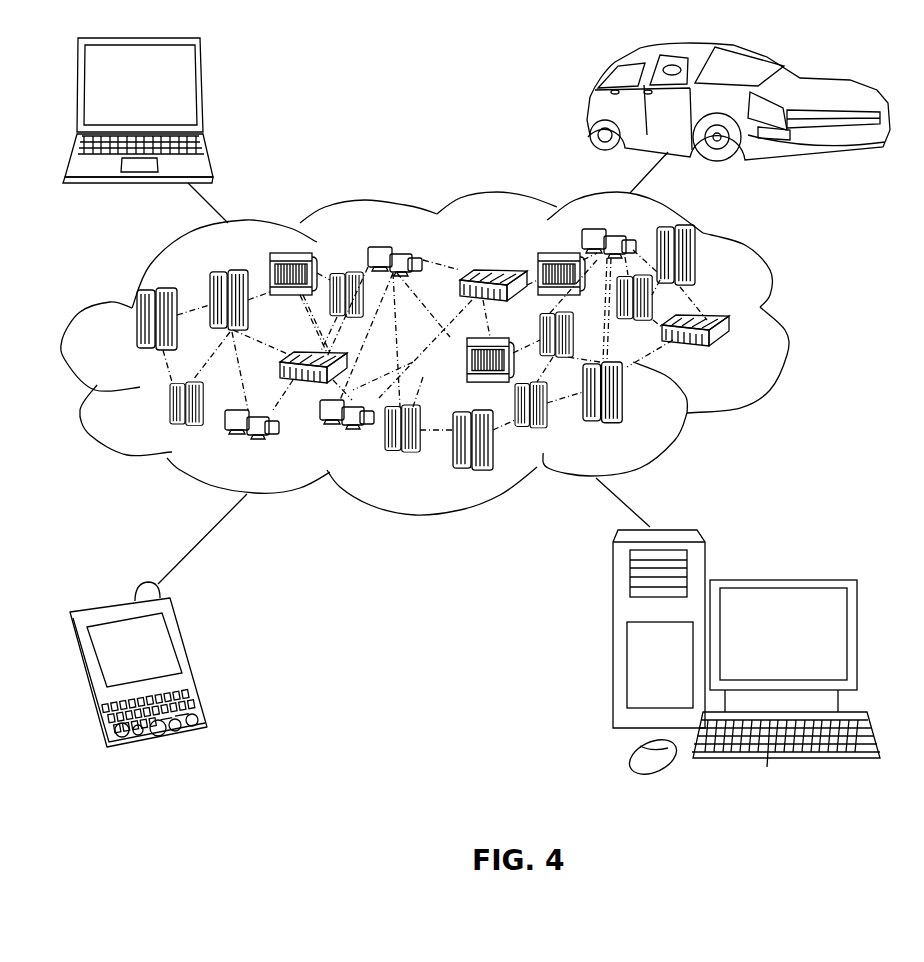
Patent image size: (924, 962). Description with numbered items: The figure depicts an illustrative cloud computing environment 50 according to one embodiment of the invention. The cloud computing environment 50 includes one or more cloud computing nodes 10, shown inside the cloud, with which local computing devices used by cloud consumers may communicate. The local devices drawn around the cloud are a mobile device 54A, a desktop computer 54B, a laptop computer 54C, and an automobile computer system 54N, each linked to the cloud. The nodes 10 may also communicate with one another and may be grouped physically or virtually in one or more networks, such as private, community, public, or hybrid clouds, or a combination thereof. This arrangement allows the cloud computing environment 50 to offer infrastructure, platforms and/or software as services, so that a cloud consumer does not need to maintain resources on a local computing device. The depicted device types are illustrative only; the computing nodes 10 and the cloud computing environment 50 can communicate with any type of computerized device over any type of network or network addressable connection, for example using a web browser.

The cloud computing node 10 is at (731, 353).
The cloud computing environment 50 is at (447, 353).
The mobile device 54A is at (190, 664).
The desktop computer 54B is at (782, 578).
The laptop computer 54C is at (200, 92).
The automobile computer system 54N is at (588, 102).